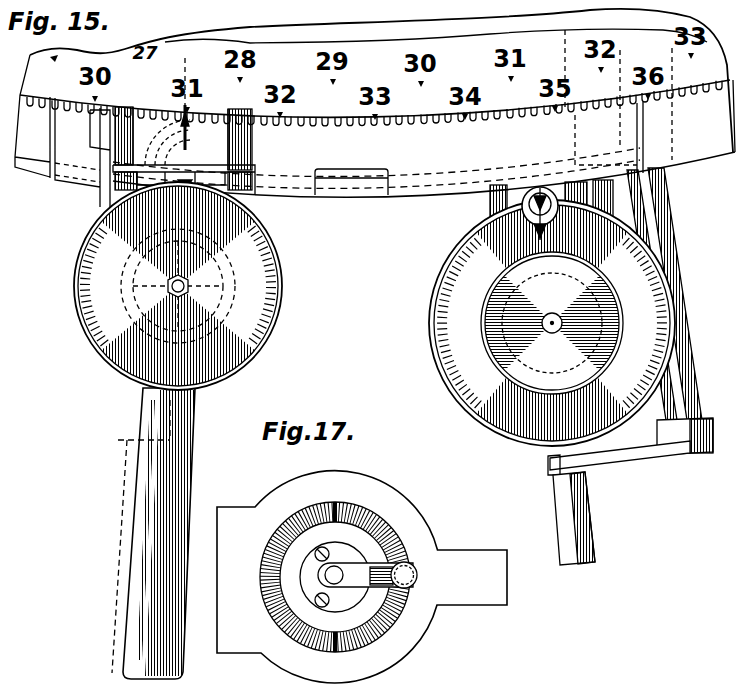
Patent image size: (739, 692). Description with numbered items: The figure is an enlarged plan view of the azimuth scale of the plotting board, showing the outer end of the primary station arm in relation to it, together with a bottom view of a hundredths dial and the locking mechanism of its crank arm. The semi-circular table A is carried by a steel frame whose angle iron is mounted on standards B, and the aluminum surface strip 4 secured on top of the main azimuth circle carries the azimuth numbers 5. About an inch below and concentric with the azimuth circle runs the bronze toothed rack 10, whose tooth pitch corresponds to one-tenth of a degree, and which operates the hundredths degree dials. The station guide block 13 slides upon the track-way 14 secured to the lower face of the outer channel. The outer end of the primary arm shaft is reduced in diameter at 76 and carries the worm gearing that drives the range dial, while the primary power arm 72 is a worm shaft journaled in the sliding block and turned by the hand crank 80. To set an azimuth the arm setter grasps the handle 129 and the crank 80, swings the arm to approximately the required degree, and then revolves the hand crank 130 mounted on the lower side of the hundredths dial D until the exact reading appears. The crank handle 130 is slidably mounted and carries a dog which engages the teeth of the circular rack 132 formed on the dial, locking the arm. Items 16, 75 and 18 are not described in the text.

In FIG. 15, the frame plate / base 16 is at (172, 42).
In FIG. 15, the azimuth numbers 5 is at (253, 43).
In FIG. 15, the semi-circular table A is at (405, 25).
In FIG. 15, the aluminum surface strip 4 is at (449, 50).
In FIG. 15, the toothed rack 10 is at (393, 118).
In FIG. 15, the track-way 14 is at (358, 180).
In FIG. 15, the guide block 13 is at (420, 173).
In FIG. 15, the slide block 75 is at (606, 140).
In FIG. 15, the reduced section 76 is at (562, 212).
In FIG. 15, the primary power arm 72 is at (680, 252).
In FIG. 15, the hand crank 80 is at (584, 518).
In FIG. 15, the handle 129 is at (145, 533).
In FIG. 17, the handle 129 is at (477, 614).
In FIG. 15, the hundredths dial D is at (70, 282).
In FIG. 15, the standards B is at (552, 323).
In FIG. 17, the hand crank 130 is at (412, 570).
In FIG. 17, the arm 18 is at (434, 577).
In FIG. 17, the circular rack 132 is at (264, 585).